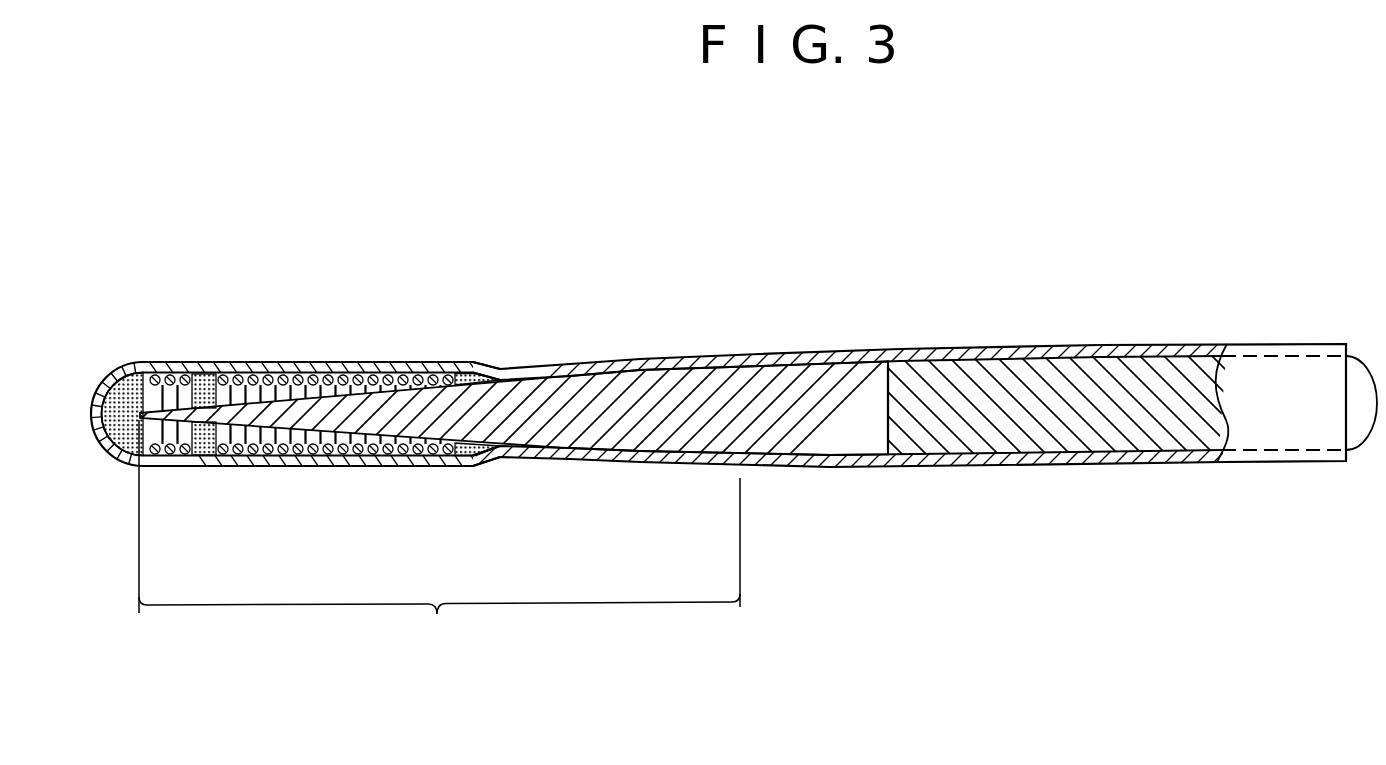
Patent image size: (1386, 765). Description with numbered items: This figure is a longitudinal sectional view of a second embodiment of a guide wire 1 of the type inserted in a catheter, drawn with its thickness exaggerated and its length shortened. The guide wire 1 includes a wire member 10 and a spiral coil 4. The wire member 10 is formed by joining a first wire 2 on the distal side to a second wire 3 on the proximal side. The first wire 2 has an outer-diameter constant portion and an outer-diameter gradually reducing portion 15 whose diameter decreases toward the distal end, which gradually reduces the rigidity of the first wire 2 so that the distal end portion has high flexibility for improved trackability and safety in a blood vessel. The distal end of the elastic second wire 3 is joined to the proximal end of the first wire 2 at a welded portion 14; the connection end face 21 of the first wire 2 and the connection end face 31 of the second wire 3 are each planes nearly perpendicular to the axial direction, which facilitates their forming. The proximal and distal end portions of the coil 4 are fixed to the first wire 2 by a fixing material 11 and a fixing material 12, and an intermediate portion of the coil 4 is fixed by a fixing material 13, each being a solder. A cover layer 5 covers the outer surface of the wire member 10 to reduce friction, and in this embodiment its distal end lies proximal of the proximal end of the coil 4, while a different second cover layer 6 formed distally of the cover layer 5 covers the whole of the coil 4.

The guide wire 1 is at (800, 300).
The first wire 2 is at (595, 385).
The second wire 3 is at (1125, 370).
The coil 4 is at (372, 378).
The cover layer 5 is at (997, 468).
The second cover layer 6 is at (378, 466).
The wire member 10 is at (997, 358).
The fixing material 11 is at (472, 366).
The fixing material 12 is at (118, 374).
The fixing material 13 is at (205, 378).
The welded portion 14 is at (887, 372).
The outer-diameter gradually reducing portion 15 is at (439, 538).
The connection end face 21 is at (905, 372).
The connection end face 31 is at (868, 372).